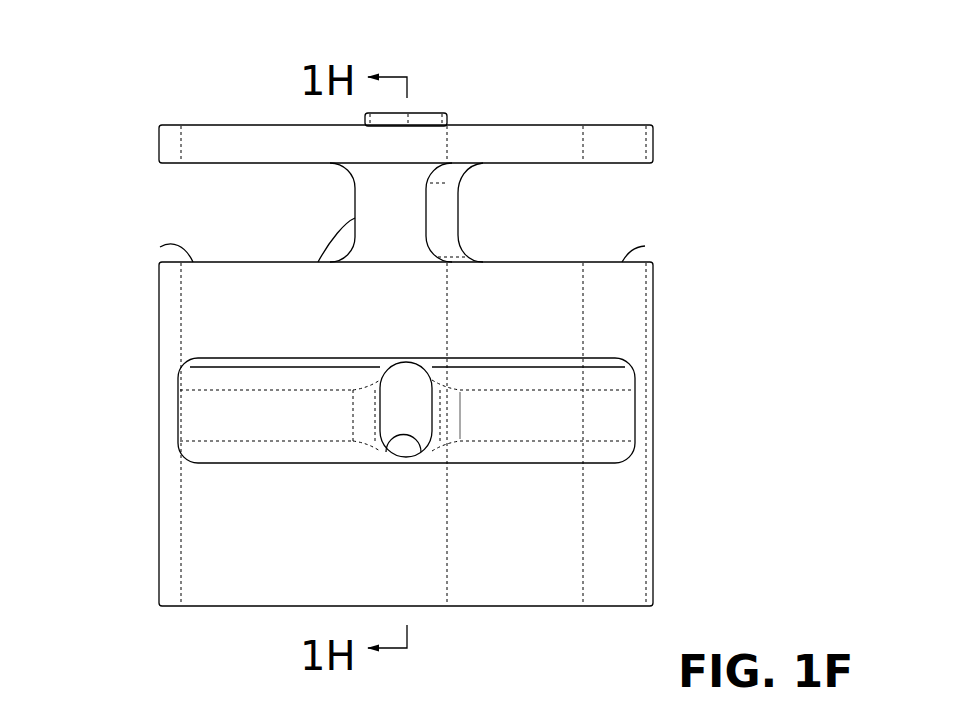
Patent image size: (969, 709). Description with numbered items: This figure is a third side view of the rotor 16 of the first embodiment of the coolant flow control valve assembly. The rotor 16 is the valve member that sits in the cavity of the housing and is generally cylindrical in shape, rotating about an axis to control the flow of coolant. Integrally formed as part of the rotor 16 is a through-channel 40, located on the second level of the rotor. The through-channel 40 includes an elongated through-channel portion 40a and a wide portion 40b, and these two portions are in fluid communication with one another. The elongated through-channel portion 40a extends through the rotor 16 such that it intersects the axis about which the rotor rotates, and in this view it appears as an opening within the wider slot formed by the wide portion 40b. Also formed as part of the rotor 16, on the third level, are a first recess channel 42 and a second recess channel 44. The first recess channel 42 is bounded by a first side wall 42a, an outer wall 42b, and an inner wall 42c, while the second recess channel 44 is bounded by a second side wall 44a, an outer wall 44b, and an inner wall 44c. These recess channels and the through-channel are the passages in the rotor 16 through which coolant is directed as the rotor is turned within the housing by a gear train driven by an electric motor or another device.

The rotor 16 is at (120, 122).
The through-channel 40 is at (631, 403).
The elongated through-channel portion 40a is at (390, 452).
The wide portion 40b is at (198, 413).
The first recess channel 42 is at (656, 198).
The first side wall 42a is at (448, 200).
The outer wall 42b is at (557, 163).
The inner wall 42c is at (645, 246).
The second recess channel 44 is at (158, 210).
The second side wall 44a is at (318, 262).
The outer wall 44b is at (247, 163).
The inner wall 44c is at (160, 247).